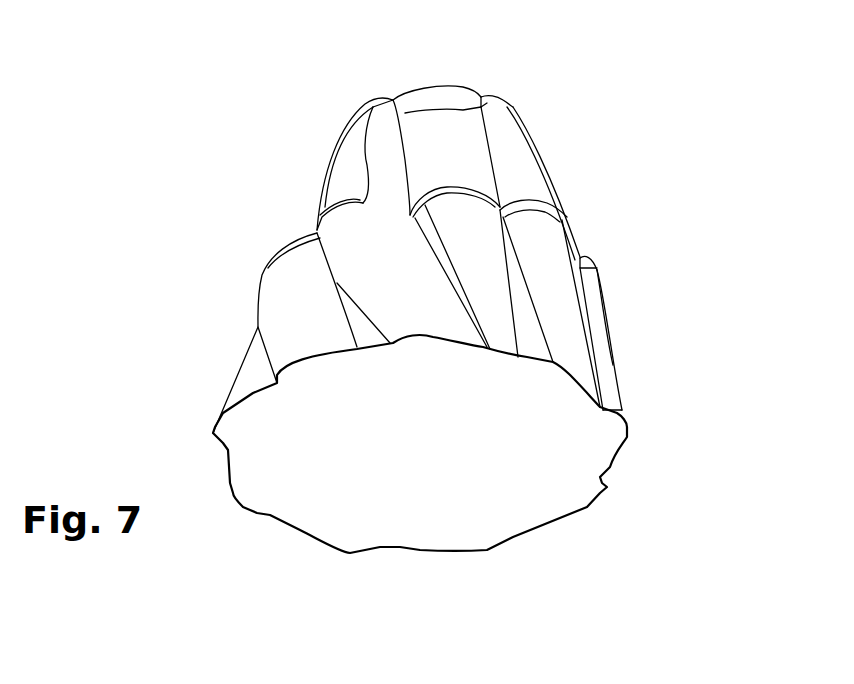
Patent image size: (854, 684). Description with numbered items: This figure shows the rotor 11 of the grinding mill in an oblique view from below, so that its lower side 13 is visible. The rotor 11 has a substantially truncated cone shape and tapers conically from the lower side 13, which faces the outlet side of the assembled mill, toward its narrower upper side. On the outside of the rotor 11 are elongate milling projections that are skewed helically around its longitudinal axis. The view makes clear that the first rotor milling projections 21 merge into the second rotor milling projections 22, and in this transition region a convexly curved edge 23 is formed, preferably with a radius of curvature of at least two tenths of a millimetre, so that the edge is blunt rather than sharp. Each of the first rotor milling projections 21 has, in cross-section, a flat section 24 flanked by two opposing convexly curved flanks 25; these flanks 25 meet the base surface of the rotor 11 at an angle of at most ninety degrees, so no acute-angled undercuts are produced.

The rotor 11 is at (615, 290).
The lower side 13 is at (450, 483).
The first rotor milling projections 21 is at (347, 178).
The second rotor milling projections 22 is at (290, 325).
The convexly curved edge 23 is at (333, 210).
The flat section 24 is at (350, 158).
The convexly curved flanks 25 is at (497, 128).